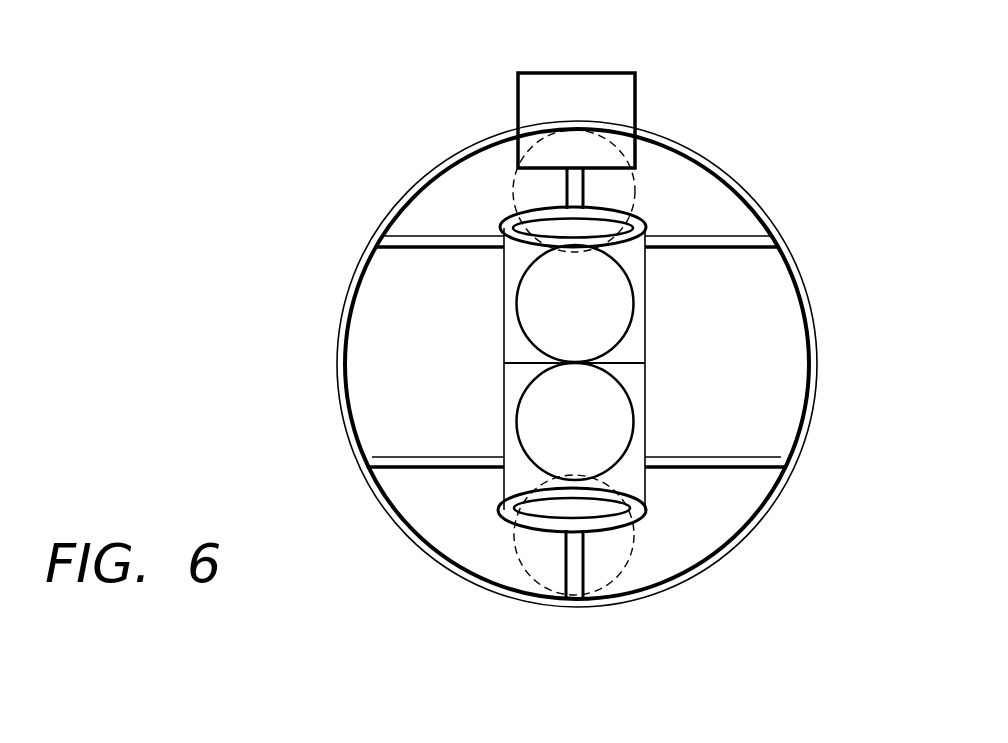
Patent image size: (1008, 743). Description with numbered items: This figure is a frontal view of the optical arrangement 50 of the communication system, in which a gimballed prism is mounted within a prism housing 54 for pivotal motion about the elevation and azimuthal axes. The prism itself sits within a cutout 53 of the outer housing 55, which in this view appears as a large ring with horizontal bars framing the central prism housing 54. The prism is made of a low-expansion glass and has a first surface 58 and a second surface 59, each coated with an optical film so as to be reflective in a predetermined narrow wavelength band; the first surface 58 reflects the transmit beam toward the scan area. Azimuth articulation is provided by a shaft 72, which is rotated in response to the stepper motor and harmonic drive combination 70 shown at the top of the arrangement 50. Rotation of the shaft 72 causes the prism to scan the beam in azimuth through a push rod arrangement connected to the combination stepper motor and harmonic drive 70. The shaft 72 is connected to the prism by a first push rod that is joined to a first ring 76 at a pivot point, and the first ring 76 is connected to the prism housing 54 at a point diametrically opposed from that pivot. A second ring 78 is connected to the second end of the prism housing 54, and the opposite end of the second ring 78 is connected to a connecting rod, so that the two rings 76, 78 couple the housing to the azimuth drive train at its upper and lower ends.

The arrangement 50 is at (775, 88).
The cutout 53 is at (725, 457).
The prism housing 54 is at (625, 368).
The housing 55 is at (440, 164).
The first surface 58 is at (617, 427).
The second surface 59 is at (613, 317).
The stepper motor and harmonic drive combination 70 is at (557, 72).
The shaft 72 is at (585, 180).
The first ring 76 is at (645, 221).
The second ring 78 is at (647, 512).